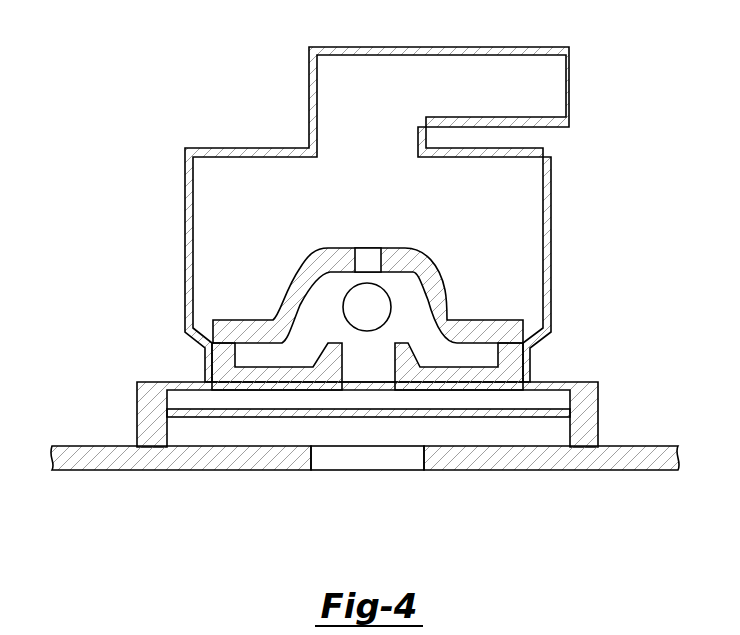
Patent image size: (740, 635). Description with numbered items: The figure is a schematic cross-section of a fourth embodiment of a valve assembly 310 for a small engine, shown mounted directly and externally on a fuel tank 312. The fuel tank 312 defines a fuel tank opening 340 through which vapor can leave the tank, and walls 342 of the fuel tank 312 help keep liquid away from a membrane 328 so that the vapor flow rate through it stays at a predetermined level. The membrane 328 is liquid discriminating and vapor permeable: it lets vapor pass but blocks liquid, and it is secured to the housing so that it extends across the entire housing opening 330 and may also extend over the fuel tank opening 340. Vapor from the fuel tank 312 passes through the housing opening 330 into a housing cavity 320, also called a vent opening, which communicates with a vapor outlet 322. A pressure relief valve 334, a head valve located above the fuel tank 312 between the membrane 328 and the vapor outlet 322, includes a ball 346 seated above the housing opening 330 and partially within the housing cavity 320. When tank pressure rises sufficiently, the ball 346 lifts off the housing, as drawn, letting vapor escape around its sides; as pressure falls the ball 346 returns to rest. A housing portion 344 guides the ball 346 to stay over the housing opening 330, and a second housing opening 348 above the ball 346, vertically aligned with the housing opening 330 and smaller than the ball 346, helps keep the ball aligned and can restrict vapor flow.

The valve assembly 310 is at (116, 220).
The fuel tank 312 is at (108, 446).
The housing cavity 320 is at (368, 254).
The vapor outlet 322 is at (556, 88).
The membrane 328 is at (245, 419).
The housing opening 330 is at (386, 367).
The pressure relief valve 334 is at (486, 279).
The fuel tank opening 340 is at (339, 462).
The walls 342 is at (132, 463).
The housing portion 344 is at (303, 278).
The ball 346 is at (360, 295).
The second housing opening 348 is at (372, 261).